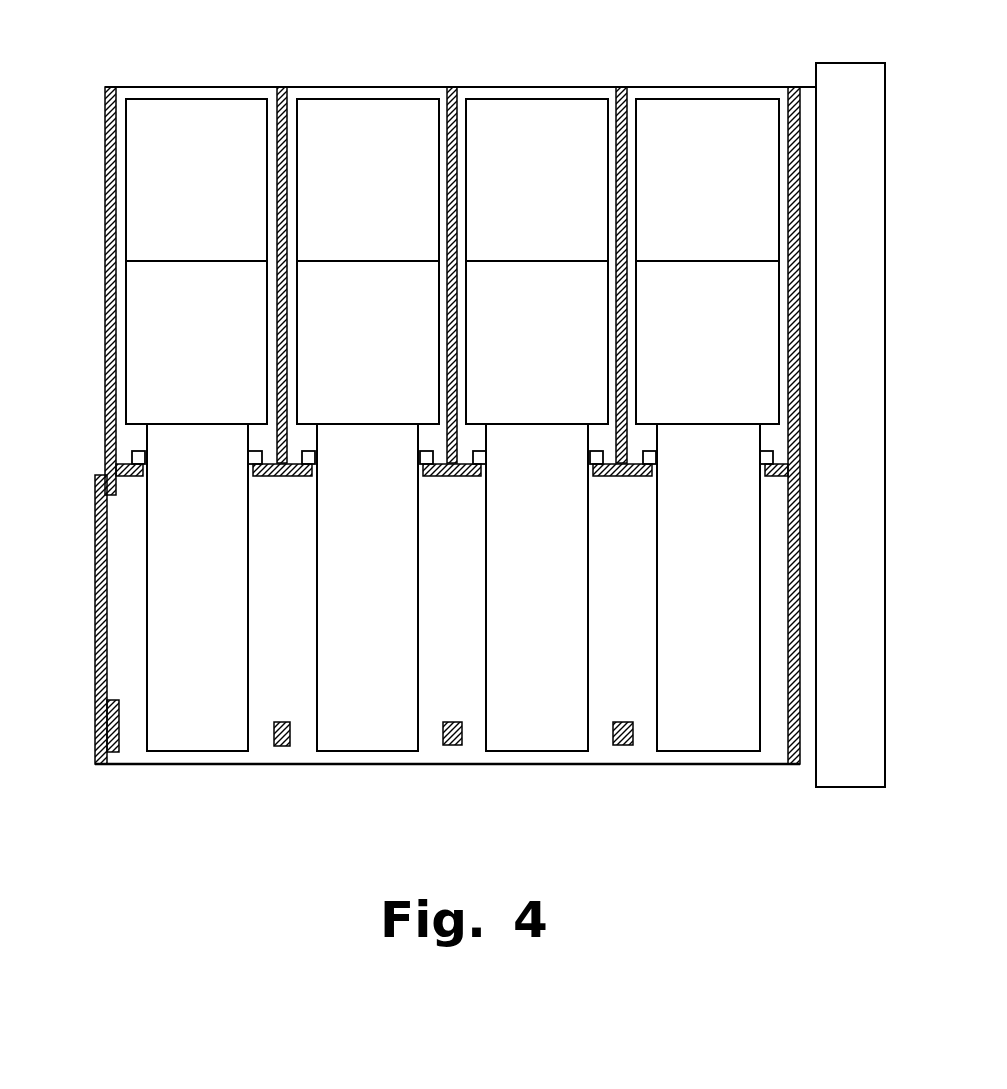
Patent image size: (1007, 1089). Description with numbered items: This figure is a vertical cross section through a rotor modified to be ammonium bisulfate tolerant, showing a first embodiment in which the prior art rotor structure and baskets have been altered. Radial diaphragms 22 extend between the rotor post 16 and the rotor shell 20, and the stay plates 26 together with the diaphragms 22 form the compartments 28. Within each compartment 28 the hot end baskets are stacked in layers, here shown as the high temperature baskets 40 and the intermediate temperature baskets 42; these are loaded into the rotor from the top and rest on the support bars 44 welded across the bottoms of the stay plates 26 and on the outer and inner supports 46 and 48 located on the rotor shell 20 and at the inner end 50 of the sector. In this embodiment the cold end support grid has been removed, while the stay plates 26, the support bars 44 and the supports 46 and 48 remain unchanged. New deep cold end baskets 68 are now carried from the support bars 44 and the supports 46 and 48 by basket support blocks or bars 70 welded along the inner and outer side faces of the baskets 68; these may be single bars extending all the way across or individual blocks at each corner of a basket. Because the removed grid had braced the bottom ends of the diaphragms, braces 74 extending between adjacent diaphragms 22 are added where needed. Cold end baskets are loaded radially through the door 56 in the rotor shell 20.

The rotor post 16 is at (836, 772).
The rotor shell 20 is at (113, 87).
The radial diaphragm 22 is at (694, 91).
The stay plate 26 is at (283, 87).
The compartment 28 is at (372, 93).
The high temperature basket 40 is at (541, 109).
The intermediate temperature basket 42 is at (147, 342).
The support bar 44 is at (452, 476).
The outer support 46 is at (130, 479).
The inner support 48 is at (768, 478).
The inner end of the sector 50 is at (791, 88).
The door 56 is at (95, 577).
The deep cold end basket 68 is at (160, 652).
The basket support block or bar 70 is at (250, 456).
The brace 74 is at (281, 748).